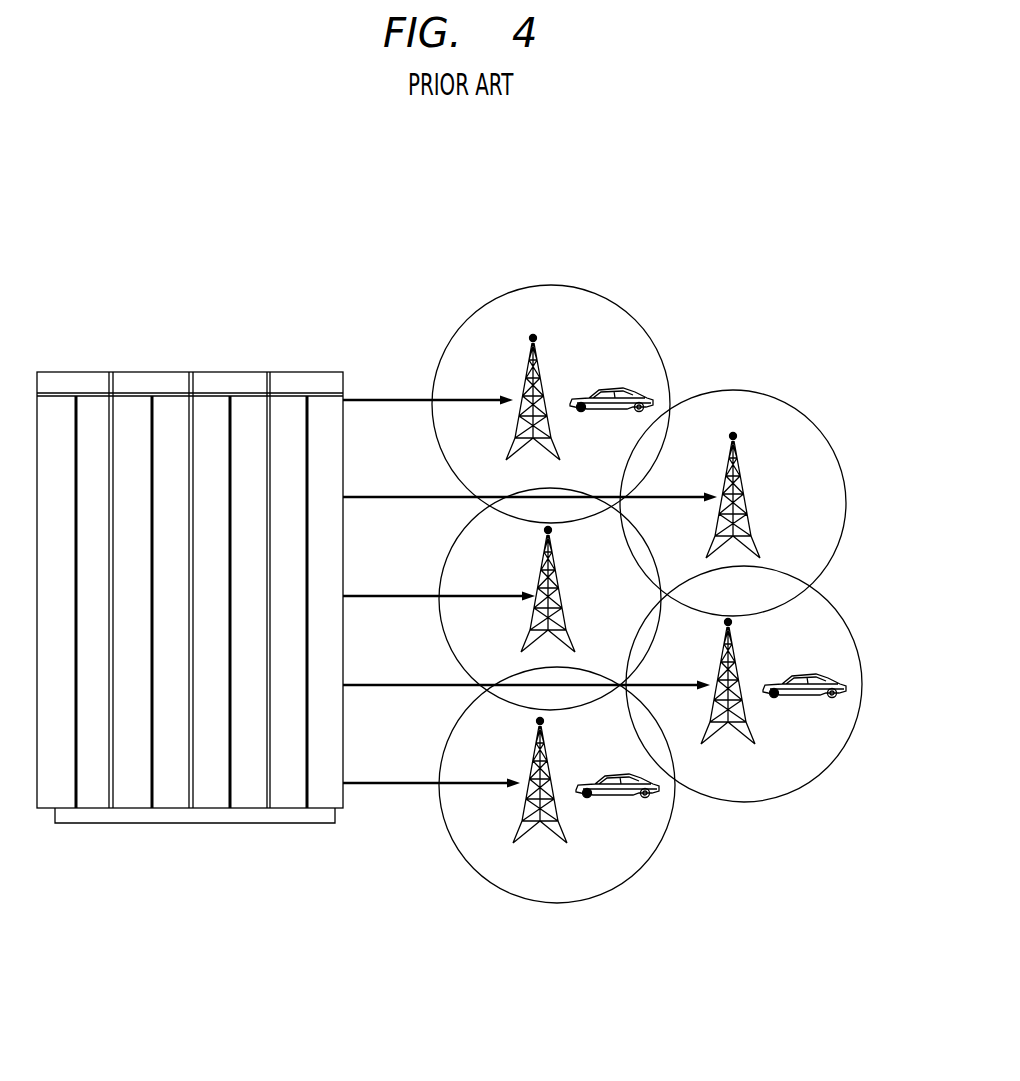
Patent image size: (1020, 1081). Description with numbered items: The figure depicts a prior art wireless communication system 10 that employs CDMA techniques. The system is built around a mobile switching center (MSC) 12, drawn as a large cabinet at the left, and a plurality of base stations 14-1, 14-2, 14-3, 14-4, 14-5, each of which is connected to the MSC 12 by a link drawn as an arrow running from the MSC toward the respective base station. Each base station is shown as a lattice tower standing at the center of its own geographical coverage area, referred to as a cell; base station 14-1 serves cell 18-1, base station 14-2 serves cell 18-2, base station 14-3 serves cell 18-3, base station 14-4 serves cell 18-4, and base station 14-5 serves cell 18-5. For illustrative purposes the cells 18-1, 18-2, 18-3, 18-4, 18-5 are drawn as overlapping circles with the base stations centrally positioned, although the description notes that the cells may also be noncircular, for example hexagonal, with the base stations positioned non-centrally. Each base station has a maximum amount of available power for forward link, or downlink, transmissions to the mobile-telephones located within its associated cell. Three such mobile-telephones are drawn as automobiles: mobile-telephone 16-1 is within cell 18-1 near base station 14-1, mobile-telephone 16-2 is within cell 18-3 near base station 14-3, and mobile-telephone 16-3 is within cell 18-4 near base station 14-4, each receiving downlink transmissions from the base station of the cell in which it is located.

The wireless communication system 10 is at (449, 138).
The mobile switching center 12 is at (213, 370).
The base station 14-1 is at (531, 356).
The base station 14-2 is at (546, 553).
The base station 14-3 is at (536, 747).
The base station 14-4 is at (755, 735).
The base station 14-5 is at (742, 471).
The mobile-telephone 16-1 is at (610, 387).
The mobile-telephone 16-2 is at (611, 799).
The mobile-telephone 16-3 is at (801, 670).
The cell 18-1 is at (553, 286).
The cell 18-2 is at (444, 560).
The cell 18-3 is at (555, 904).
The cell 18-4 is at (742, 803).
The cell 18-5 is at (734, 391).